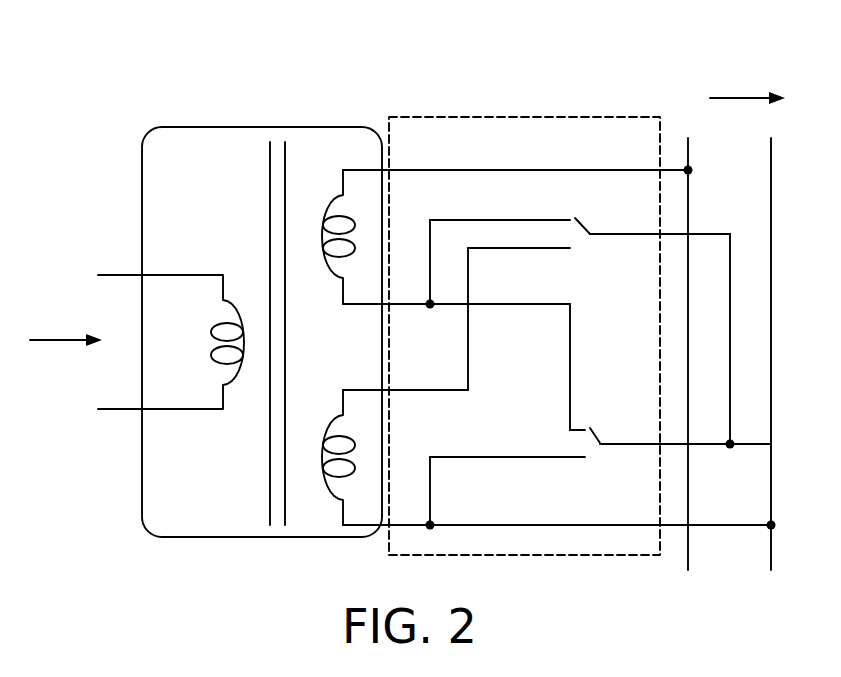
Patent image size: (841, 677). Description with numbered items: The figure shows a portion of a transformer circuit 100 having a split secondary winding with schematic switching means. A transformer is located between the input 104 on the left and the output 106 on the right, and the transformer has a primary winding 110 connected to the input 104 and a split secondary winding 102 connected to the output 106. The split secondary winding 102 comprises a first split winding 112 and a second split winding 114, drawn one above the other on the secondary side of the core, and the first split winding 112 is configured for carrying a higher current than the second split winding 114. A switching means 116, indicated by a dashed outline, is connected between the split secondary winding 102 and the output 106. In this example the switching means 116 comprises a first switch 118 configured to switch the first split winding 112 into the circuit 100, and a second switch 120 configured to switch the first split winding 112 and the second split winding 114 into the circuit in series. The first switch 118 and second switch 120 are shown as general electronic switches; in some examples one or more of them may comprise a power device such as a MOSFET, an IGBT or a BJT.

The transformer circuit 100 is at (189, 84).
The split secondary winding 102 is at (335, 108).
The input 104 is at (55, 338).
The output 106 is at (736, 96).
The primary winding 110 is at (191, 273).
The first split winding 112 is at (327, 278).
The second split winding 114 is at (327, 500).
The switching means 116 is at (543, 105).
The first switch 118 is at (588, 236).
The second switch 120 is at (601, 446).